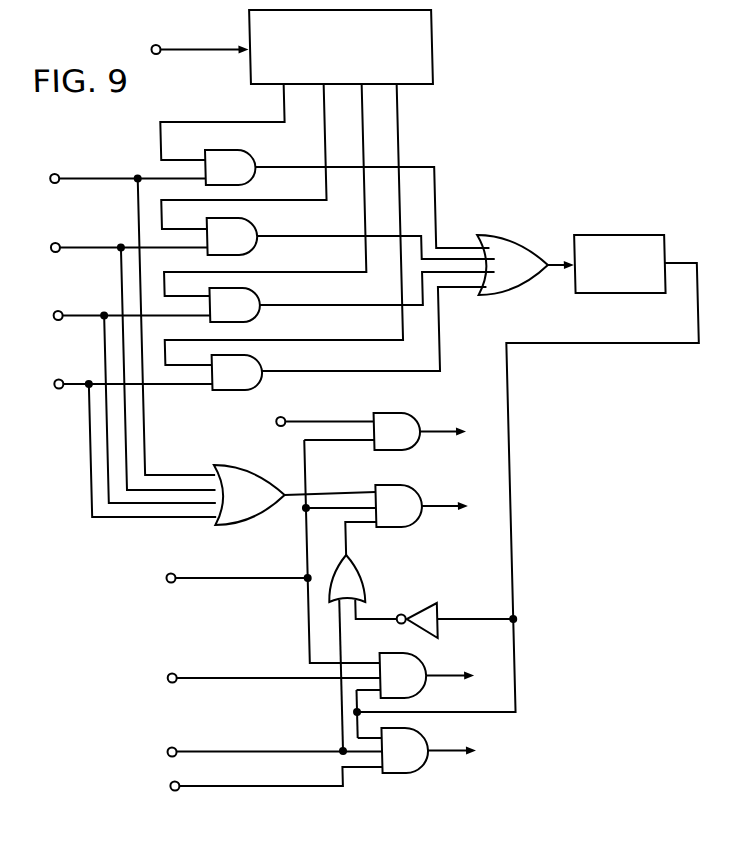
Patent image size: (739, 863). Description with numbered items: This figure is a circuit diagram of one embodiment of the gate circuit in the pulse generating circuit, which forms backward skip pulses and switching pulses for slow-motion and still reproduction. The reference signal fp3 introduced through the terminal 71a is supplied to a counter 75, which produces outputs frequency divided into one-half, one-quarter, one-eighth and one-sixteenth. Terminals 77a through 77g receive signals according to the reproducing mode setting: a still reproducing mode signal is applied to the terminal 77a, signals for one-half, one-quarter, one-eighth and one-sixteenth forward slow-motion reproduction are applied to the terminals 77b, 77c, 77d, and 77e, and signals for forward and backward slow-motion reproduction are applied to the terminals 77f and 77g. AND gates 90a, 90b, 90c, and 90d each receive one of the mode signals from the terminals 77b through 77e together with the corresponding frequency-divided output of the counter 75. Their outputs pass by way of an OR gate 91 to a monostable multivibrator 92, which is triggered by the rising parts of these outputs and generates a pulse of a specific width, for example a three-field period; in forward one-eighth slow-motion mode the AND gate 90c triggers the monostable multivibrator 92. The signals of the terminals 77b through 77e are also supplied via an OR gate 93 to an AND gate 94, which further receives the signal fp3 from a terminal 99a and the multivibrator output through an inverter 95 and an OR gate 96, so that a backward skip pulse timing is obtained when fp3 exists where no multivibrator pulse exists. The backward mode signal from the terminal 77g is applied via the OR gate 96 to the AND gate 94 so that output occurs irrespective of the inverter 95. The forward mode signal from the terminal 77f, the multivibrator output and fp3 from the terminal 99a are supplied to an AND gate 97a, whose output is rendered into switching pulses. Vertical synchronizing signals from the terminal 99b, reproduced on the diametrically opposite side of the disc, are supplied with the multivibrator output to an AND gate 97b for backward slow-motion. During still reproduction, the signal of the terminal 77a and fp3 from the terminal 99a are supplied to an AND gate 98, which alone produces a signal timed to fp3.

The terminal 71a is at (162, 46).
The counter 75 is at (445, 33).
The terminal 77a is at (279, 417).
The terminal 77b is at (59, 173).
The terminal 77c is at (58, 243).
The terminal 77d is at (59, 311).
The terminal 77e is at (58, 380).
The terminal 77f is at (166, 674).
The terminal 77g is at (162, 748).
The AND gate 90a is at (259, 155).
The AND gate 90b is at (259, 224).
The AND gate 90c is at (258, 293).
The AND gate 90d is at (257, 362).
The OR gate 91 is at (512, 235).
The monostable multivibrator 92 is at (614, 235).
The OR gate 93 is at (237, 465).
The AND gate 94 is at (410, 486).
The inverter 95 is at (424, 603).
The OR gate 96 is at (359, 580).
The AND gate 97a is at (421, 655).
The AND gate 97b is at (410, 771).
The AND gate 98 is at (411, 413).
The terminal 99a is at (164, 574).
The terminal 99b is at (161, 786).